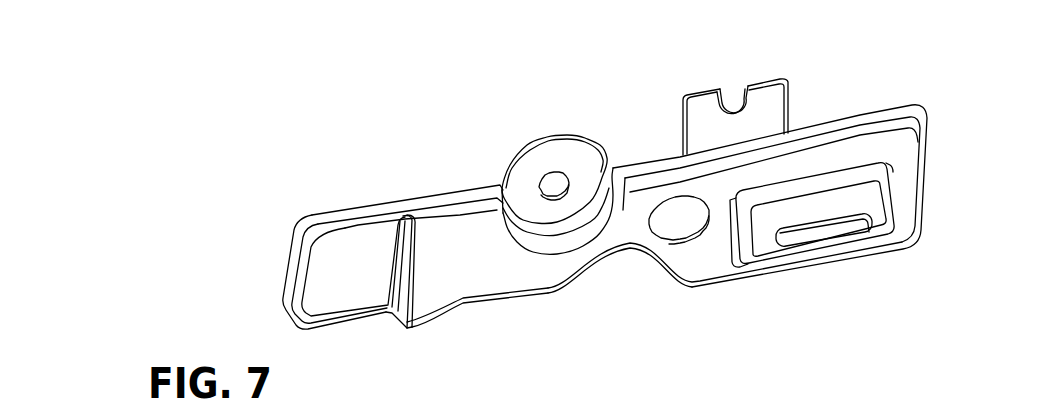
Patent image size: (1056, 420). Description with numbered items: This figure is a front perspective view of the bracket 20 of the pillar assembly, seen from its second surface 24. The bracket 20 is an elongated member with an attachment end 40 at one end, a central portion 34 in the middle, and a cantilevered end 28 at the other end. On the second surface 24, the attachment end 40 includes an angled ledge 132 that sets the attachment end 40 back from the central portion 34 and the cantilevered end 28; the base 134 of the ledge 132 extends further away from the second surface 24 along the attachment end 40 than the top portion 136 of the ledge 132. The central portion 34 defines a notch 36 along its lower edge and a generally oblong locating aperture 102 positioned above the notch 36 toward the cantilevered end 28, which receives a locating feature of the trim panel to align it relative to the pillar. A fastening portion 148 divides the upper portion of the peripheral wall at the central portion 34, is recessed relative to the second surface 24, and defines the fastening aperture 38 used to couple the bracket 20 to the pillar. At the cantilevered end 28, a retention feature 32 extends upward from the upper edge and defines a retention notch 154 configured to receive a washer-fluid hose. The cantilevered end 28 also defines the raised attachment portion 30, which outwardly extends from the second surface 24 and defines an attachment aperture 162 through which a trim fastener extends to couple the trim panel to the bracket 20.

The bracket 20 is at (288, 208).
The second surface 24 is at (482, 275).
The cantilevered end 28 is at (862, 157).
The raised attachment portion 30 is at (885, 210).
The retention feature 32 is at (692, 100).
The central portion 34 is at (530, 267).
The notch 36 is at (622, 252).
The fastening aperture 38 is at (553, 179).
The attachment end 40 is at (348, 253).
The locating aperture 102 is at (680, 222).
The ledge 132 is at (402, 273).
The base 134 is at (399, 328).
The top portion 136 is at (412, 222).
The fastening portion 148 is at (518, 145).
The retention notch 154 is at (740, 100).
The attachment aperture 162 is at (820, 230).